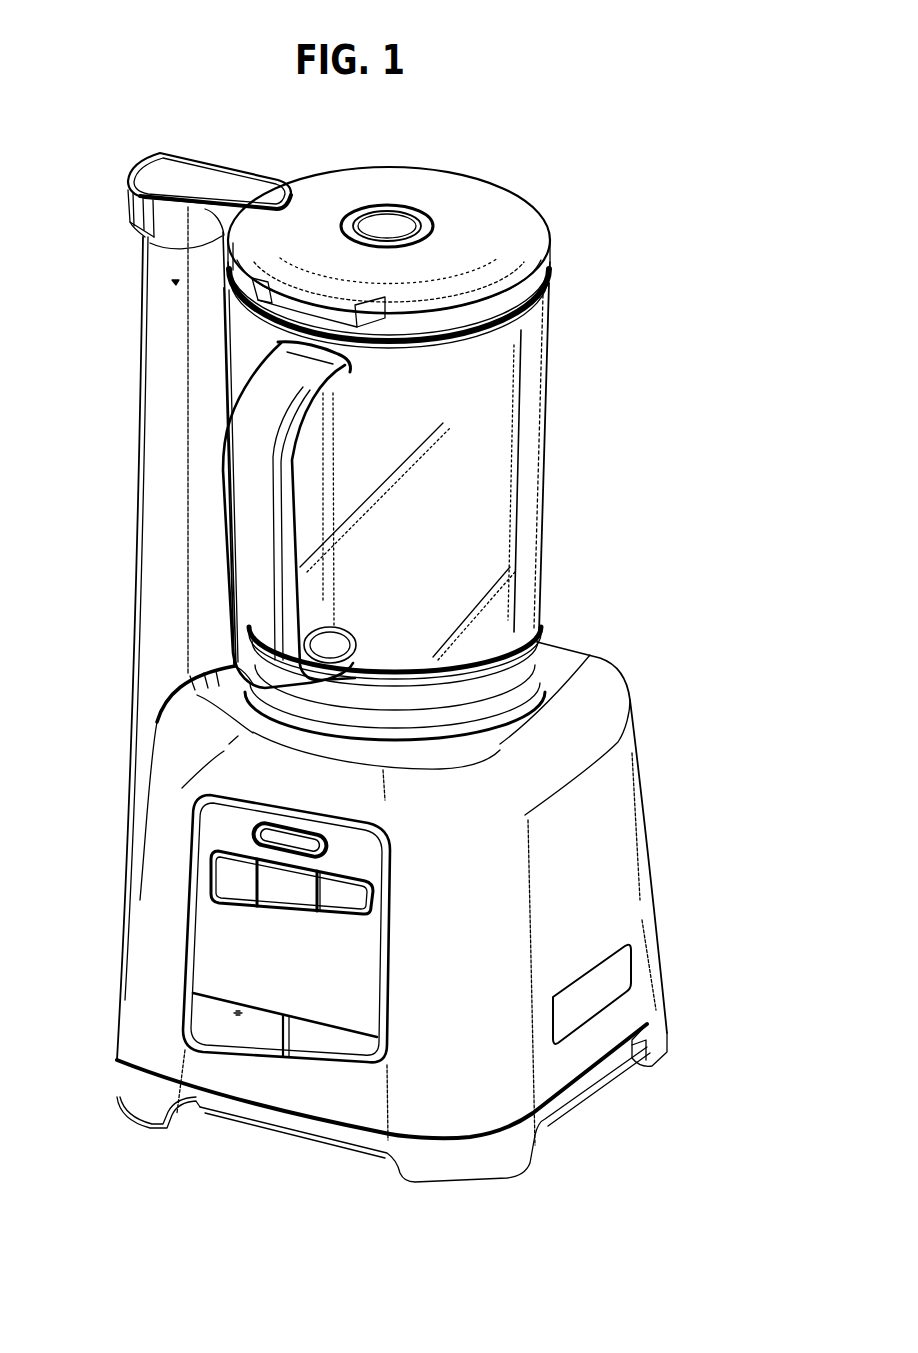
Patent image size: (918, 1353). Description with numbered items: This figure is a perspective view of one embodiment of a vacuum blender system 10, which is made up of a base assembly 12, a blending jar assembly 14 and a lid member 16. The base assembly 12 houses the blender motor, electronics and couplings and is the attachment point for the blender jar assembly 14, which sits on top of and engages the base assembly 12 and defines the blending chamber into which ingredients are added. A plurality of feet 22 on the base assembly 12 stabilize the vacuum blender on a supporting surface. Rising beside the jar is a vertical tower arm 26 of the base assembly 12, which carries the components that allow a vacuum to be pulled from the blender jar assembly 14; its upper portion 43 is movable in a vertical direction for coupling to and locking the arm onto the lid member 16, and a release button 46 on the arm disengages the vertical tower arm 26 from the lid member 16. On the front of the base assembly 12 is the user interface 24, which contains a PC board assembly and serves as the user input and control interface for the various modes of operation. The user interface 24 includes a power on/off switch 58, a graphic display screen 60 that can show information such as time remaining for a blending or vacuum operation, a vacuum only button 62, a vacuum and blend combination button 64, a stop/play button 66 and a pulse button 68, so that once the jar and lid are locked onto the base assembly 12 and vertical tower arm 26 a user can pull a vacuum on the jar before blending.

The vacuum blender system 10 is at (507, 151).
The base assembly 12 is at (646, 791).
The blender jar assembly 14 is at (550, 476).
The lid member 16 is at (538, 201).
The feet 22 is at (666, 1044).
The user interface 24 is at (393, 952).
The vertical tower arm 26 is at (137, 441).
The upper portion 43 is at (170, 233).
The release button 46 is at (145, 217).
The power on/off switch 58 is at (290, 817).
The graphic display screen 60 is at (293, 895).
The vacuum only button 62 is at (222, 878).
The vacuum and blend combination button 64 is at (347, 905).
The stop/play button 66 is at (227, 1020).
The pulse button 68 is at (353, 1045).